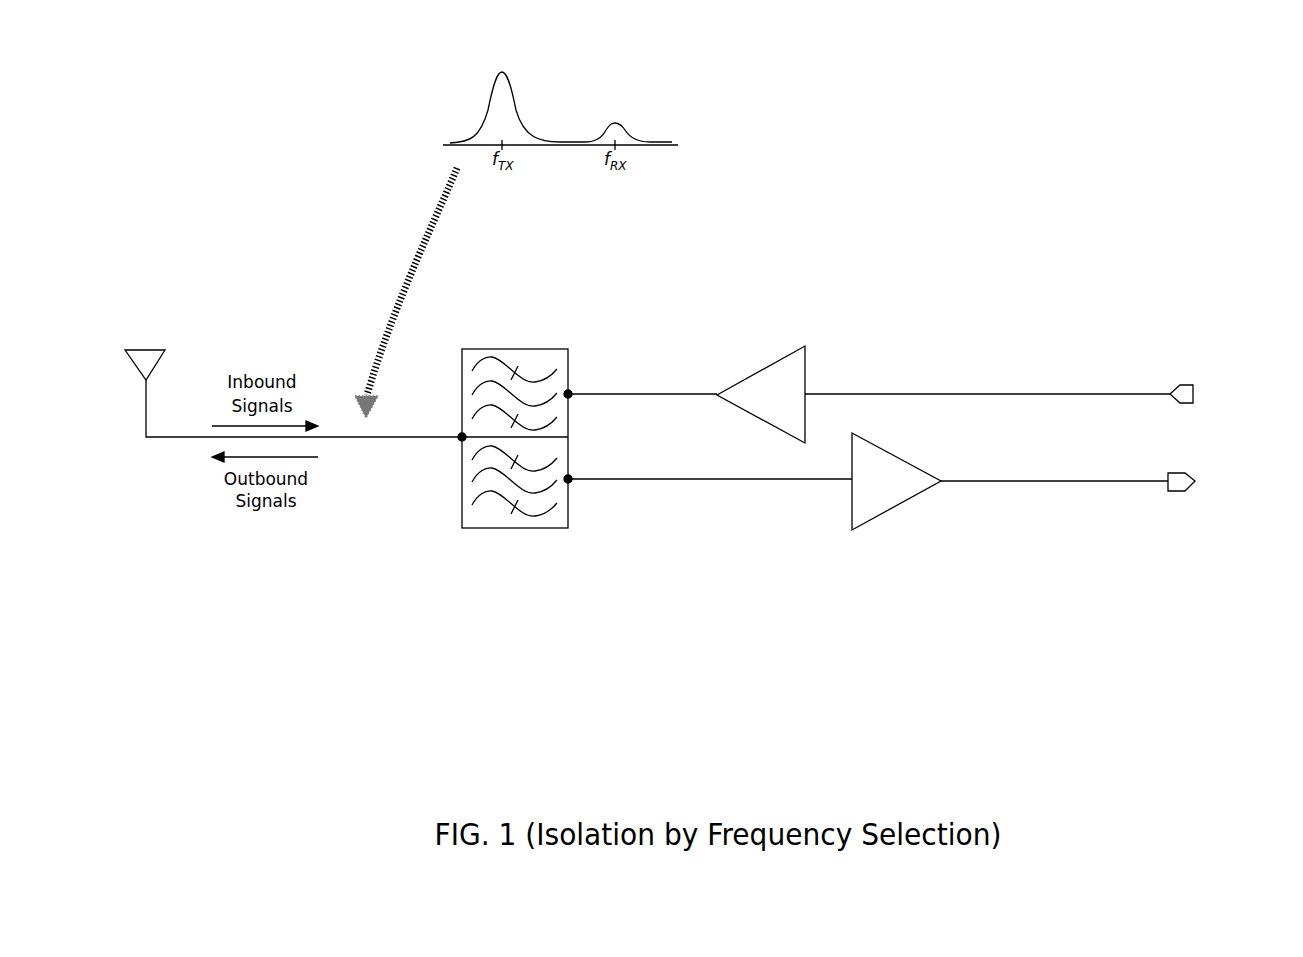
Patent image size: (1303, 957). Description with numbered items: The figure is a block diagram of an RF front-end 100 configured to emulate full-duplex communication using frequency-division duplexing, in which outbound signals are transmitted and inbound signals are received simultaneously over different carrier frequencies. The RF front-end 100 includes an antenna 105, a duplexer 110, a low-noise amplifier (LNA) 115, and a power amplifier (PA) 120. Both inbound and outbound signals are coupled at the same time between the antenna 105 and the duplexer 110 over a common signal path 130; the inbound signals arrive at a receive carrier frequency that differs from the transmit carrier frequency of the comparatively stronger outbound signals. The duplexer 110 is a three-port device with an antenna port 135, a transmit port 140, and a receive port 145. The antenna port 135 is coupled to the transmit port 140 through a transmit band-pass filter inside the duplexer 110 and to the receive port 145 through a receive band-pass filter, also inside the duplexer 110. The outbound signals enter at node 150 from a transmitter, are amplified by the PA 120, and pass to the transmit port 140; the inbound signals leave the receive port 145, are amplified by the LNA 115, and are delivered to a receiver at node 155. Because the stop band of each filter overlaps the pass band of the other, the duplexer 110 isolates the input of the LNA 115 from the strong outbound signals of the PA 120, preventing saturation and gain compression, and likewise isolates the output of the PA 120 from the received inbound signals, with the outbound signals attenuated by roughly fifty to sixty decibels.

The RF front-end 100 is at (270, 684).
The antenna 105 is at (158, 362).
The duplexer 110 is at (518, 349).
The low-noise amplifier (LNA) 115 is at (900, 507).
The power amplifier (PA) 120 is at (770, 365).
The common signal path 130 is at (175, 440).
The antenna port 135 is at (458, 440).
The transmit port 140 is at (572, 392).
The receive port 145 is at (572, 482).
The node 150 is at (1193, 394).
The node 155 is at (1195, 481).